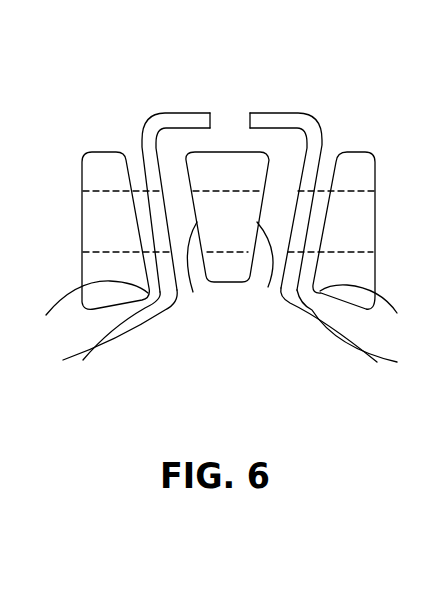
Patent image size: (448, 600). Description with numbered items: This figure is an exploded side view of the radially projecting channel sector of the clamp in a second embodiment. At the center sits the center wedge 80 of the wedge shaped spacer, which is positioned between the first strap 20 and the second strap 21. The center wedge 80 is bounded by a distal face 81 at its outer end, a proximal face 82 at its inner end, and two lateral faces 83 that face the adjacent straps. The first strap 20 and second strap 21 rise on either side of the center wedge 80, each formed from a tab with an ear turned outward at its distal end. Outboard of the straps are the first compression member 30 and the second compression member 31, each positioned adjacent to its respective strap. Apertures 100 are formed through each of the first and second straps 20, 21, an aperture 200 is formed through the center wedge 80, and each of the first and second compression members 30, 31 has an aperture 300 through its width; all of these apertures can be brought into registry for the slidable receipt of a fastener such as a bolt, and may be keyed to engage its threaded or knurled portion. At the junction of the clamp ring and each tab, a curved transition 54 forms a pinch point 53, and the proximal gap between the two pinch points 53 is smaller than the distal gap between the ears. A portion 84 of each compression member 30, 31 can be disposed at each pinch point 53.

The first strap 20 is at (142, 81).
The second strap 21 is at (313, 99).
The first compression member 30 is at (105, 173).
The second compression member 31 is at (354, 168).
The aperture 300 is at (107, 217).
The apertures 100 is at (160, 218).
The center wedge 80 is at (230, 121).
The distal face 81 is at (222, 152).
The proximal face 82 is at (228, 267).
The lateral faces 83 is at (232, 269).
The portion of compression member 84 is at (221, 307).
The aperture 200 is at (238, 205).
The pinch point 53 is at (150, 310).
The curved transition 54 is at (168, 307).